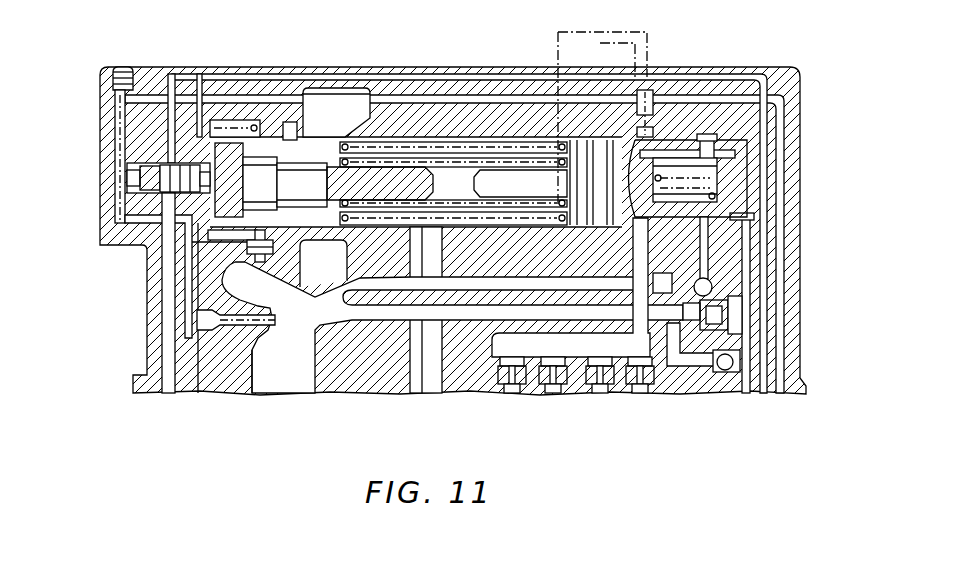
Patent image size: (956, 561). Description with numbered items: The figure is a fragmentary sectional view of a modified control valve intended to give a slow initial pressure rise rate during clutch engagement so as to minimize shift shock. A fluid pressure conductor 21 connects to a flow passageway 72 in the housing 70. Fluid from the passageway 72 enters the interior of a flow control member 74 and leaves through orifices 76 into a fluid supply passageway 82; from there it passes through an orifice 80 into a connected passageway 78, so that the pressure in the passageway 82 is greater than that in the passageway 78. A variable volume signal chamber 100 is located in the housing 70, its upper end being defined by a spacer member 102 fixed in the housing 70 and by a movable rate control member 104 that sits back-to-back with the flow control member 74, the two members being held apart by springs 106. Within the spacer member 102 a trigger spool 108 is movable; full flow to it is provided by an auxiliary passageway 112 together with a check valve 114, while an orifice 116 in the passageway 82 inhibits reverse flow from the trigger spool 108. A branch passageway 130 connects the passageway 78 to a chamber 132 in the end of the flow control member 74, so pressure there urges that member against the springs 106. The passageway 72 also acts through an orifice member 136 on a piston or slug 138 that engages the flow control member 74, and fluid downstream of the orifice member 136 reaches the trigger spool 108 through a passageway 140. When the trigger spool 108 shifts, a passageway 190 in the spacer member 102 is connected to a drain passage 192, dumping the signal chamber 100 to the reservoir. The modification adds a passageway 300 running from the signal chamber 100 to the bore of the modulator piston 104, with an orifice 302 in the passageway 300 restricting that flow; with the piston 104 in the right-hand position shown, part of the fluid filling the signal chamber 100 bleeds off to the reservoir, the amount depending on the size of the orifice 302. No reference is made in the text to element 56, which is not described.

The fluid pressure conductor 21 is at (340, 100).
The fluid supply passage 56 is at (120, 108).
The housing 70 is at (443, 55).
The flow passageway 72 is at (353, 107).
The flow control member 74 is at (245, 133).
The orifices 76 is at (285, 133).
The passageway 78 is at (292, 369).
The orifice 80 is at (300, 279).
The fluid supply passageway 82 is at (348, 246).
The variable volume signal chamber 100 is at (646, 261).
The spacer member 102 is at (735, 150).
The movable rate control member 104 is at (577, 228).
The springs 106 is at (495, 147).
The trigger spool 108 is at (730, 192).
The auxiliary passageway 112 is at (697, 367).
The check valve 114 is at (733, 357).
The orifice 116 is at (735, 312).
The branch passageway 130 is at (233, 325).
The chamber 132 is at (197, 153).
The orifice member 136 is at (142, 192).
The piston or slug 138 is at (150, 247).
The passageway 140 is at (465, 78).
The passageway 190 is at (662, 148).
The drain passage 192 is at (713, 288).
The passageway 300 is at (558, 47).
The orifice 302 is at (600, 30).